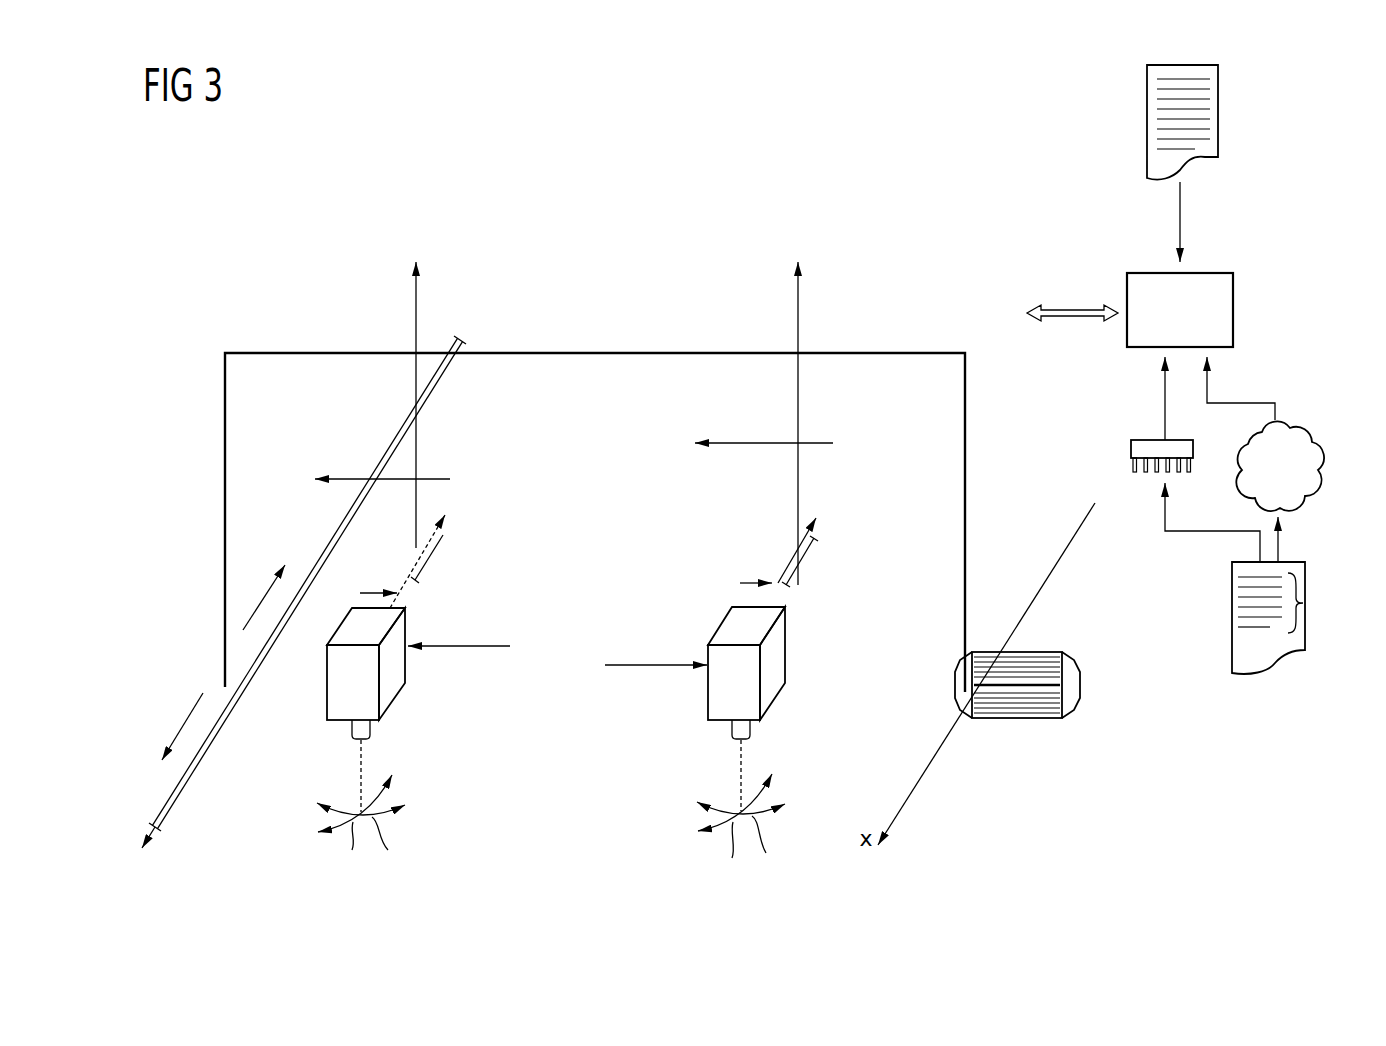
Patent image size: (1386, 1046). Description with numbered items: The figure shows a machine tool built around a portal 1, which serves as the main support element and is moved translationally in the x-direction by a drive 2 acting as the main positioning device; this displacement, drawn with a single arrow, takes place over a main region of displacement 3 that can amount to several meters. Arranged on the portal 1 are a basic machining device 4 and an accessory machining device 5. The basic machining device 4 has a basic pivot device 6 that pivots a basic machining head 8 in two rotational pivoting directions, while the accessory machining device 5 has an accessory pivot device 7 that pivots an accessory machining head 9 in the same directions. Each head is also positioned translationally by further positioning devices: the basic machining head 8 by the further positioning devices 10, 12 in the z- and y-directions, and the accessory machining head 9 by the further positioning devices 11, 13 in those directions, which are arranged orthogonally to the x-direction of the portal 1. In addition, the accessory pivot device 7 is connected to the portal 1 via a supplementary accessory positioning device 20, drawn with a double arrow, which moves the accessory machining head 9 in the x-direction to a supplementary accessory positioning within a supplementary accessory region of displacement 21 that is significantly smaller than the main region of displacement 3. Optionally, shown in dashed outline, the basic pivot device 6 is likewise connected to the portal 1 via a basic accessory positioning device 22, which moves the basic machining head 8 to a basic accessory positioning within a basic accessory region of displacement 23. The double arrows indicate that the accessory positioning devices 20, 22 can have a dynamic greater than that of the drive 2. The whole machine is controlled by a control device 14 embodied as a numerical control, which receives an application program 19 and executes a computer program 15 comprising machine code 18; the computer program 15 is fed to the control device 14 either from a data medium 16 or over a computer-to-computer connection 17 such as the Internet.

The portal 1 is at (547, 353).
The drive 2 is at (1082, 688).
The region of displacement 3 is at (189, 779).
The machining device 4 is at (500, 293).
The machining device 5 is at (863, 292).
The basic pivot device 6 is at (390, 692).
The accessory pivot device 7 is at (768, 692).
The basic machining head 8 is at (370, 728).
The accessory machining head 9 is at (750, 727).
The further positioning device 10 is at (416, 300).
The further positioning device 11 is at (800, 300).
The further positioning device 12 is at (387, 481).
The further positioning device 13 is at (772, 448).
The control device 14 is at (1207, 272).
The computer program 15 is at (1232, 620).
The data medium 16 is at (1155, 438).
The computer-to-computer connection 17 is at (1298, 428).
The machine code 18 is at (1303, 605).
The application program 19 is at (1145, 125).
The supplementary accessory positioning device 20 is at (785, 562).
The supplementary accessory region of displacement 21 is at (798, 566).
The basic accessory positioning device 22 is at (397, 590).
The basic accessory region of displacement 23 is at (427, 560).